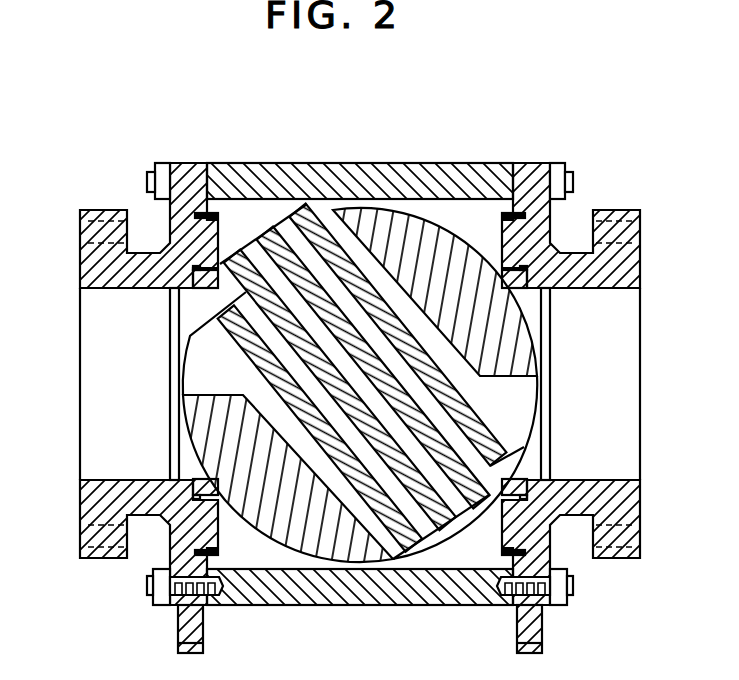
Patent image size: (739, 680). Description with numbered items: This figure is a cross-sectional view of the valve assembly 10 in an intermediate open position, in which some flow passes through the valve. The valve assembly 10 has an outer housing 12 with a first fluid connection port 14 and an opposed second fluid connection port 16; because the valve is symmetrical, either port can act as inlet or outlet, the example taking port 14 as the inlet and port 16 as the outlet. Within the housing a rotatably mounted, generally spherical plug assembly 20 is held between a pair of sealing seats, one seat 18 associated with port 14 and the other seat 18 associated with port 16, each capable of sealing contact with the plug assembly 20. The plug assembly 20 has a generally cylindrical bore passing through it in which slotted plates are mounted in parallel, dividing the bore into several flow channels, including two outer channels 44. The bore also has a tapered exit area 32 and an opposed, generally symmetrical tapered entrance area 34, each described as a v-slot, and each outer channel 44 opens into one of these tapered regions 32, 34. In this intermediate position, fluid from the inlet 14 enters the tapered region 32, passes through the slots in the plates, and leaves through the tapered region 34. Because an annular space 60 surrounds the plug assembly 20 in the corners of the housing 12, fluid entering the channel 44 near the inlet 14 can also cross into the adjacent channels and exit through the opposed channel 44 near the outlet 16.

The valve assembly 10 is at (340, 117).
The outer housing 12 is at (447, 162).
The first fluid connection port 14 is at (640, 303).
The second fluid connection port 16 is at (79, 305).
The sealing seat 18 is at (198, 266).
The spherical plug assembly 20 is at (433, 211).
The tapered exit area 32 is at (524, 419).
The tapered entrance area 34 is at (198, 343).
The outer channel 44 is at (250, 368).
The annular space 60 is at (360, 380).